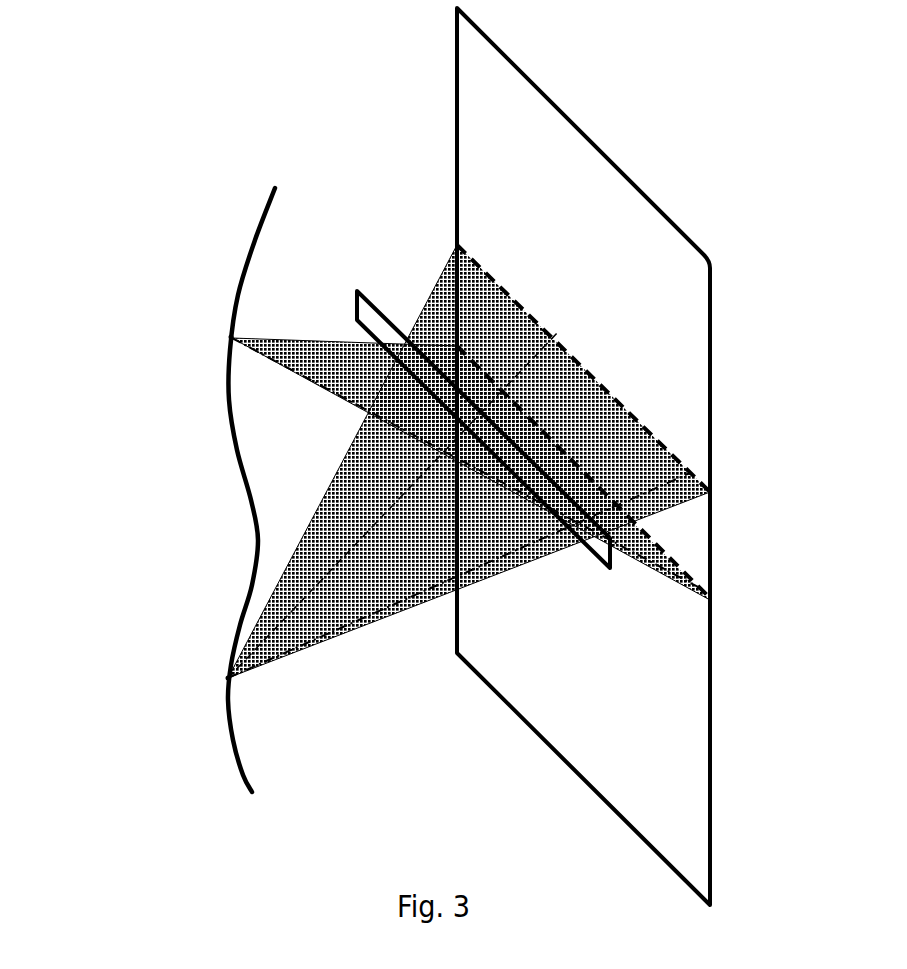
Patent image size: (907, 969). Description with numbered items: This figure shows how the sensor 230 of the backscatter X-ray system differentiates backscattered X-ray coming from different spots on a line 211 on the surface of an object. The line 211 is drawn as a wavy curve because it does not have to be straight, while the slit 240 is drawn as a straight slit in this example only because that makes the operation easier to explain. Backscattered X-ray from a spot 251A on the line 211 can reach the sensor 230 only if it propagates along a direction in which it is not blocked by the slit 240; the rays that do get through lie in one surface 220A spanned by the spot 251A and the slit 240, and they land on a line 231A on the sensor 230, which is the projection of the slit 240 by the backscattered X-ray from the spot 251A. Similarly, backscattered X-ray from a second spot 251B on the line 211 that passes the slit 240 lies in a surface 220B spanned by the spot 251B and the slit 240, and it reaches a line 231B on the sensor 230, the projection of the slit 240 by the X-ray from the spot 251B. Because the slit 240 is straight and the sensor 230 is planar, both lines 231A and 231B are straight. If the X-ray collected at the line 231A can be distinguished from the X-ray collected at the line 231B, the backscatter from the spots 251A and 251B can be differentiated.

The line 211 is at (250, 230).
The surface 220A is at (320, 332).
The surface 220B is at (355, 646).
The sensor 230 is at (730, 334).
The line 231A is at (705, 577).
The line 231B is at (690, 440).
The slit 240 is at (397, 315).
The spot 251A is at (213, 334).
The spot 251B is at (210, 677).